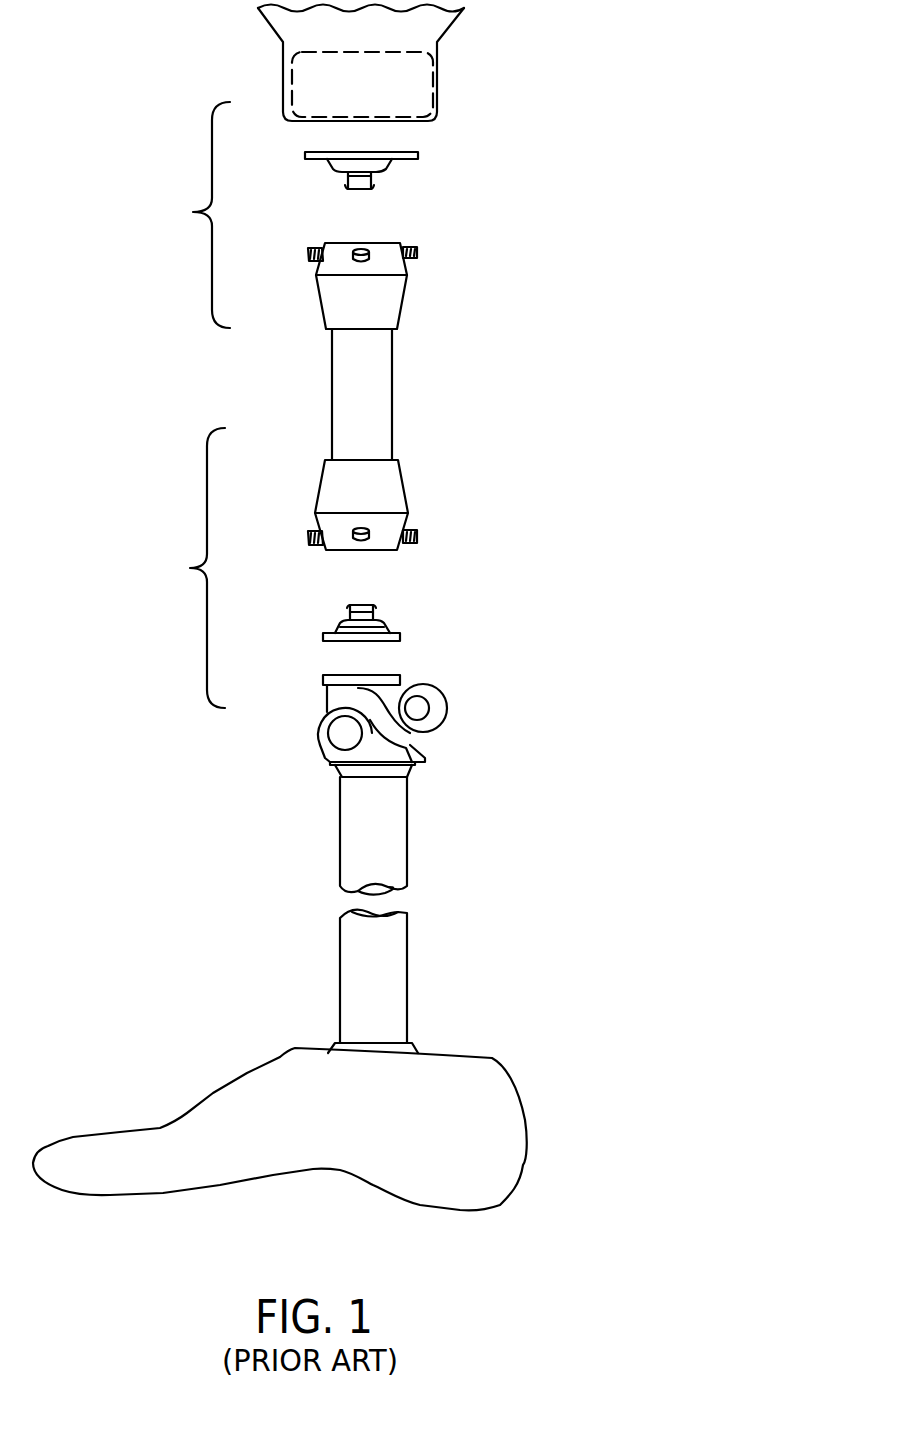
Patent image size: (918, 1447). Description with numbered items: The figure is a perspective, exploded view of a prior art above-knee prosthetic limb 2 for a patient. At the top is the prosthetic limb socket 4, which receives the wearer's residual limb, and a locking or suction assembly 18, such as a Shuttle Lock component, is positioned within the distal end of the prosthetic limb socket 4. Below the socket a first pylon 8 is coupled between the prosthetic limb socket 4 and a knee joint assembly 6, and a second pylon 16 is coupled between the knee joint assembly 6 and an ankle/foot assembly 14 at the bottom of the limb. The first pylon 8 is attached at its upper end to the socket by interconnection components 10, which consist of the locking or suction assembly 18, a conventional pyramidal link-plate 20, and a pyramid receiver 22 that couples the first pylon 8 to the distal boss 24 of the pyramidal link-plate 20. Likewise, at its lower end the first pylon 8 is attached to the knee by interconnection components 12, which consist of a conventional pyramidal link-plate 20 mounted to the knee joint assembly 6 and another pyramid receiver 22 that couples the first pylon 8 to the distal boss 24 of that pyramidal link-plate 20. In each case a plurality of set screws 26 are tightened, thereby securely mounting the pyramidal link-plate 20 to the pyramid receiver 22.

The above-knee prosthetic limb 2 is at (713, 334).
The prosthetic limb socket 4 is at (458, 18).
The knee joint assembly 6 is at (455, 712).
The first pylon 8 is at (388, 405).
The interconnection components 10 is at (191, 215).
The interconnection components 12 is at (187, 568).
The ankle/foot assembly 14 is at (462, 1043).
The second pylon 16 is at (402, 830).
The locking or suction assembly 18 is at (425, 97).
The pyramidal link-plate 20 is at (397, 165).
The pyramid receiver 22 is at (407, 305).
The distal boss 24 is at (345, 183).
The set screws 26 is at (353, 255).